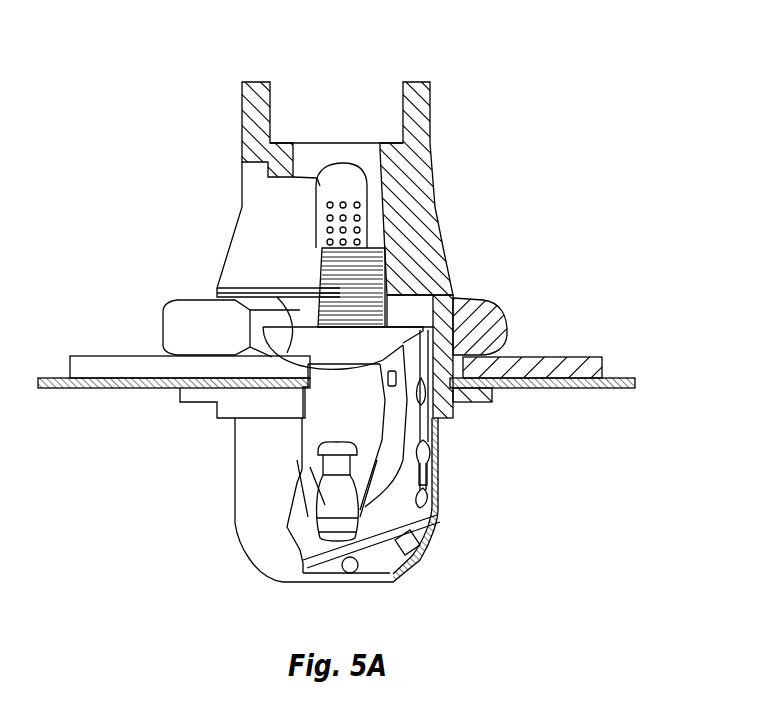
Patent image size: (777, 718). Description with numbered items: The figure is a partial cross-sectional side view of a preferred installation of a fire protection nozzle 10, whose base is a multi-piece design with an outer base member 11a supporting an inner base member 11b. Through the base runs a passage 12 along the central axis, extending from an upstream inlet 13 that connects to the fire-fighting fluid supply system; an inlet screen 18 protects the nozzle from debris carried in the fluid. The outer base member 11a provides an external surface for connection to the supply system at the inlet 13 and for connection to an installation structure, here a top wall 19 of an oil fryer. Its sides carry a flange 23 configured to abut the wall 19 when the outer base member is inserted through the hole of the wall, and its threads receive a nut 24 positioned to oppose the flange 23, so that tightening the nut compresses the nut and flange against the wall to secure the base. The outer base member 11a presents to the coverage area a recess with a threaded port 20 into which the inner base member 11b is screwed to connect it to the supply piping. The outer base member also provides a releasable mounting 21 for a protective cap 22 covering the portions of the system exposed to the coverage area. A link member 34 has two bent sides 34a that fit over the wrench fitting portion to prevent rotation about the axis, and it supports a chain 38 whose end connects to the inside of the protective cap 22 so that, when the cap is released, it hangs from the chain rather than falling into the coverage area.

The fire protection nozzle 10 is at (242, 118).
The outer base member 11a is at (235, 222).
The inner base member 11b is at (383, 410).
The passage 12 is at (289, 79).
The inlet 13 is at (386, 82).
The inlet screen 18 is at (358, 172).
The top wall 19 is at (620, 380).
The threaded port 20 is at (423, 306).
The releasable mounting 21 is at (192, 402).
The protective cap 22 is at (238, 468).
The flange 23 is at (480, 405).
The nut 24 is at (508, 337).
The link member 34 is at (270, 292).
The bent sides 34a is at (457, 303).
The chain 38 is at (437, 513).